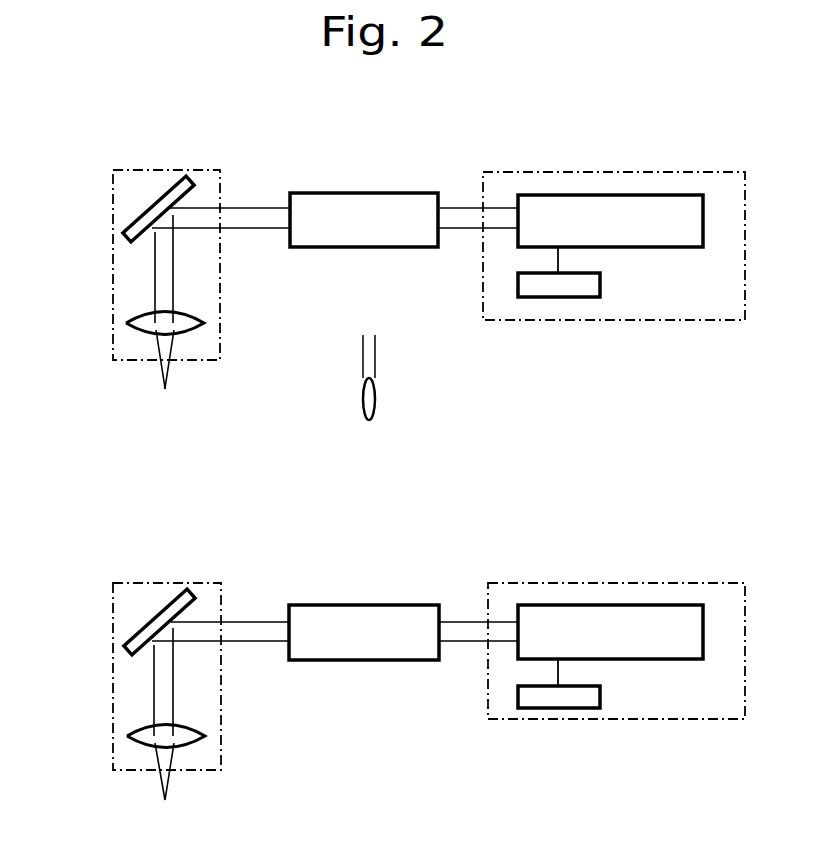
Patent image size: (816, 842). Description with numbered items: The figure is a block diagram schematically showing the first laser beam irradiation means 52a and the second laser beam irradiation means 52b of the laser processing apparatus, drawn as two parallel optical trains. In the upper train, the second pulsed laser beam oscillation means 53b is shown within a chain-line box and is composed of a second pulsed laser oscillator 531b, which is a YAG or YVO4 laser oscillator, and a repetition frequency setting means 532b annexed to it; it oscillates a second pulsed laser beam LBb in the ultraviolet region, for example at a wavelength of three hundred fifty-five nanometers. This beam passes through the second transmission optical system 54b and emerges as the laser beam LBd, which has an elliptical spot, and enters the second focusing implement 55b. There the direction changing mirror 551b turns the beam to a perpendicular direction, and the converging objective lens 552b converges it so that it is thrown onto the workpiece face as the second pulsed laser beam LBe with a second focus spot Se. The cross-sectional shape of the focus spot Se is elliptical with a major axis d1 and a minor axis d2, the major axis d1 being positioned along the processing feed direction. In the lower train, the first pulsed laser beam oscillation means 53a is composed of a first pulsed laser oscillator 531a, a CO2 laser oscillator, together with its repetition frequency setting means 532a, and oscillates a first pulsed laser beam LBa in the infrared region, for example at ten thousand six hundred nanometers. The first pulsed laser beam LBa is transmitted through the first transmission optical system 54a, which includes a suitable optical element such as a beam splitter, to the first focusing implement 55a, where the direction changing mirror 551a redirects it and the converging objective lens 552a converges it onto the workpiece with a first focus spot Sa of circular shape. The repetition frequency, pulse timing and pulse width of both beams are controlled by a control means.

The first laser beam irradiation means 52a is at (517, 590).
The second laser beam irradiation means 52b is at (517, 196).
The first pulsed laser beam oscillation means 53a is at (616, 609).
The second pulsed laser beam oscillation means 53b is at (614, 201).
The first pulsed laser oscillator 531a is at (638, 659).
The second pulsed laser oscillator 531b is at (647, 240).
The repetition frequency setting means 532a is at (600, 693).
The repetition frequency setting means 532b is at (600, 282).
The first transmission optical system 54a is at (376, 602).
The second transmission optical system 54b is at (366, 190).
The first focusing implement 55a is at (129, 631).
The second focusing implement 55b is at (150, 237).
The direction changing mirror 551a is at (167, 618).
The direction changing mirror 551b is at (160, 198).
The converging objective lens 552a is at (140, 730).
The converging objective lens 552b is at (140, 322).
The first pulsed laser beam LBa is at (472, 621).
The second pulsed laser beam LBb is at (460, 229).
The laser beam LBd is at (263, 229).
The second pulsed laser beam LBe is at (158, 370).
The first focus spot Sa is at (165, 800).
The second focus spot Se is at (165, 388).
The major axis d1 is at (401, 348).
The minor axis d2 is at (398, 342).